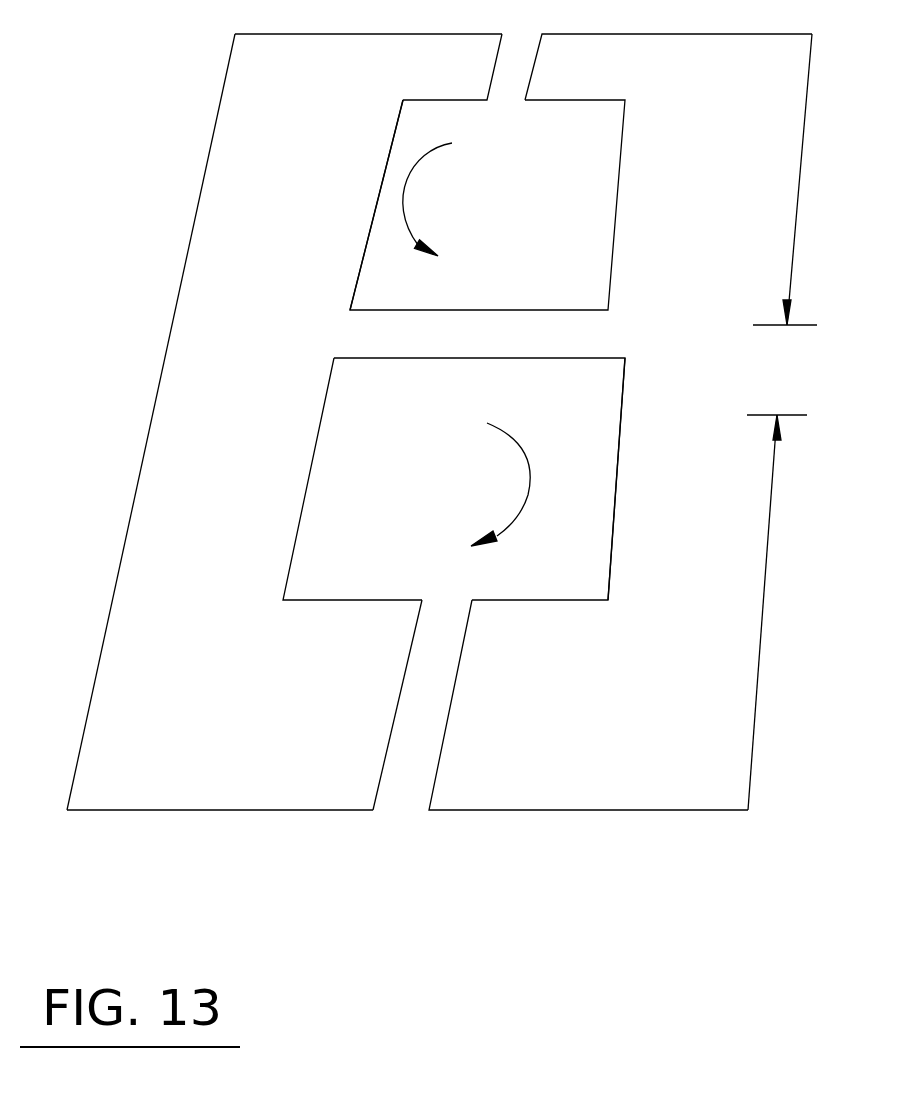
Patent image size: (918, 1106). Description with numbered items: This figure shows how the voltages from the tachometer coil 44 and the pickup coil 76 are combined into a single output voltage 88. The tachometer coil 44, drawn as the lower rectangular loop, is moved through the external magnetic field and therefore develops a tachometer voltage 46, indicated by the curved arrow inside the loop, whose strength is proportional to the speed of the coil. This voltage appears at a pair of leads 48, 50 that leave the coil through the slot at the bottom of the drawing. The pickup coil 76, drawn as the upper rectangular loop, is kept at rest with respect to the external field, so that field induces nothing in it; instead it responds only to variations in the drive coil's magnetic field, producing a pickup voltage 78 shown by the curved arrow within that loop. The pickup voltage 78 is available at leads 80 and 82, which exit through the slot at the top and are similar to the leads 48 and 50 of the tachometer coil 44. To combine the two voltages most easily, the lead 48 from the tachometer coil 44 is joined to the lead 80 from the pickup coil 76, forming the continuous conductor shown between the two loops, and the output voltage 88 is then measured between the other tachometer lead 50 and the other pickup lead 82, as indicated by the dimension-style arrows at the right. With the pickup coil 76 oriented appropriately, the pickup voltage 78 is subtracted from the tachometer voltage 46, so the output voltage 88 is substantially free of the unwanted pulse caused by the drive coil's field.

The tachometer coil 44 is at (307, 514).
The tachometer voltage 46 is at (607, 484).
The lead 48 is at (395, 705).
The lead 50 is at (447, 725).
The pickup coil 76 is at (383, 175).
The pickup voltage 78 is at (402, 182).
The lead 80 is at (497, 57).
The lead 82 is at (542, 47).
The output voltage 88 is at (782, 422).